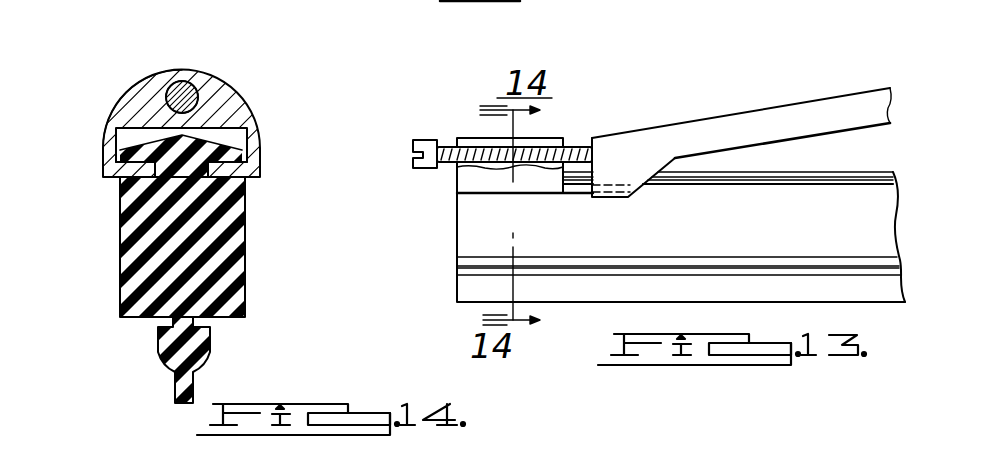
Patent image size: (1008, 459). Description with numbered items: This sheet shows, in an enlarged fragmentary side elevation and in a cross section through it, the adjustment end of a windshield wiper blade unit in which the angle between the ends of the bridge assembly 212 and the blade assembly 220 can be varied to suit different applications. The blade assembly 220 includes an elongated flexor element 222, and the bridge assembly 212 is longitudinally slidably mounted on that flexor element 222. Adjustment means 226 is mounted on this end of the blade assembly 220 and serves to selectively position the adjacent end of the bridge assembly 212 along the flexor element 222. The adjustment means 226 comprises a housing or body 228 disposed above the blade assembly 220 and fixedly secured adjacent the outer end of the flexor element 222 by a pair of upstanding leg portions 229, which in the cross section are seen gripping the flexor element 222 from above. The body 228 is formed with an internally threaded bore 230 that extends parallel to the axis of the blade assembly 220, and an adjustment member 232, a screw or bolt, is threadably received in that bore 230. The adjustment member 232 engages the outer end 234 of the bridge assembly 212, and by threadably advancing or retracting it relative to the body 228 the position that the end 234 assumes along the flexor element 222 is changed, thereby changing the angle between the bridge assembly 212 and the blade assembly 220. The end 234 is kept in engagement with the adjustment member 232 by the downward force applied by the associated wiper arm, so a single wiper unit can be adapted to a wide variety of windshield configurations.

In FIG. 13, the bridge assembly 212 is at (825, 100).
In FIG. 14, the blade assembly 220 is at (247, 280).
In FIG. 13, the blade assembly 220 is at (455, 266).
In FIG. 14, the flexor element 222 is at (218, 165).
In FIG. 13, the flexor element 222 is at (845, 183).
In FIG. 14, the adjustment means 226 is at (268, 105).
In FIG. 13, the adjustment means 226 is at (474, 128).
In FIG. 14, the body 228 is at (133, 93).
In FIG. 14, the leg portions 229 is at (112, 137).
In FIG. 14, the internally threaded bore 230 is at (197, 89).
In FIG. 13, the internally threaded bore 230 is at (486, 152).
In FIG. 14, the adjustment member 232 is at (176, 83).
In FIG. 13, the adjustment member 232 is at (425, 170).
In FIG. 13, the outer end of the bridge assembly 234 is at (580, 148).